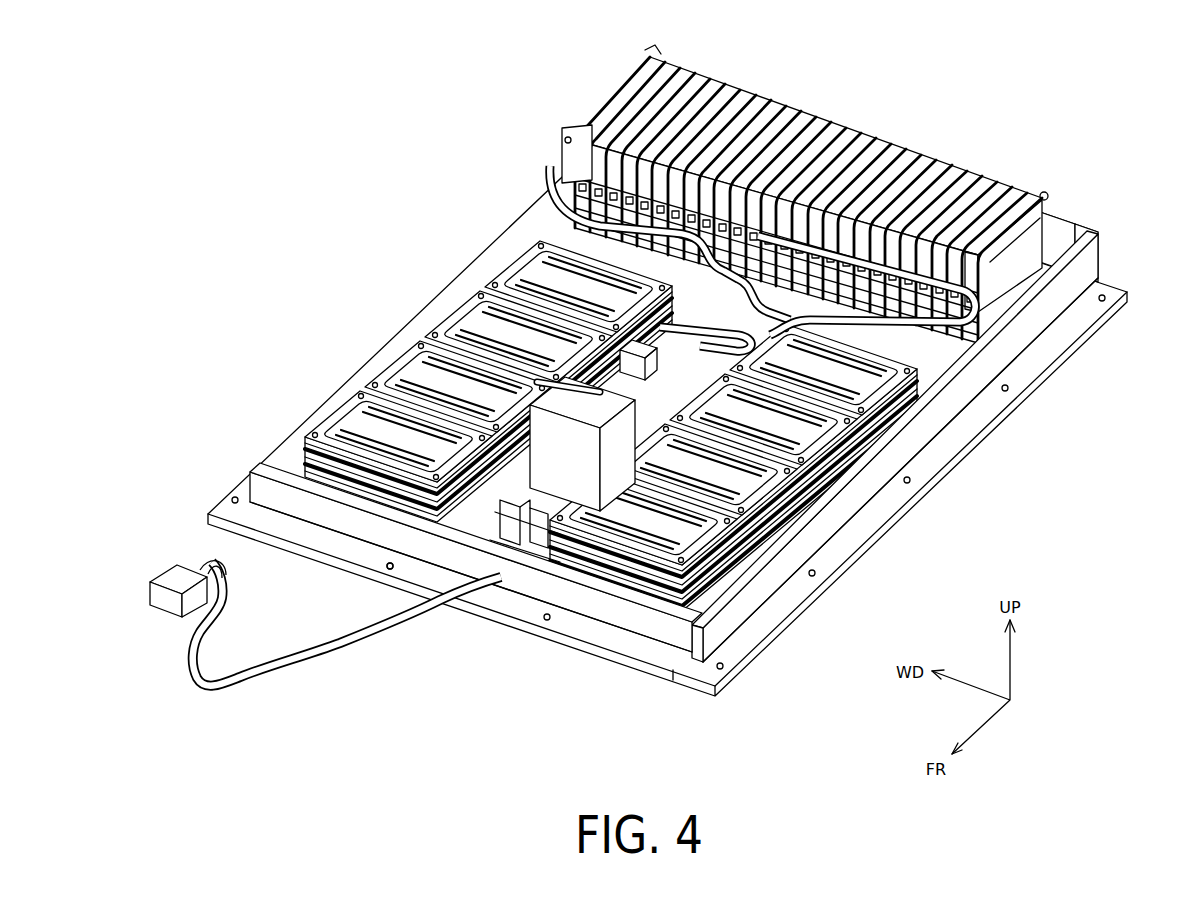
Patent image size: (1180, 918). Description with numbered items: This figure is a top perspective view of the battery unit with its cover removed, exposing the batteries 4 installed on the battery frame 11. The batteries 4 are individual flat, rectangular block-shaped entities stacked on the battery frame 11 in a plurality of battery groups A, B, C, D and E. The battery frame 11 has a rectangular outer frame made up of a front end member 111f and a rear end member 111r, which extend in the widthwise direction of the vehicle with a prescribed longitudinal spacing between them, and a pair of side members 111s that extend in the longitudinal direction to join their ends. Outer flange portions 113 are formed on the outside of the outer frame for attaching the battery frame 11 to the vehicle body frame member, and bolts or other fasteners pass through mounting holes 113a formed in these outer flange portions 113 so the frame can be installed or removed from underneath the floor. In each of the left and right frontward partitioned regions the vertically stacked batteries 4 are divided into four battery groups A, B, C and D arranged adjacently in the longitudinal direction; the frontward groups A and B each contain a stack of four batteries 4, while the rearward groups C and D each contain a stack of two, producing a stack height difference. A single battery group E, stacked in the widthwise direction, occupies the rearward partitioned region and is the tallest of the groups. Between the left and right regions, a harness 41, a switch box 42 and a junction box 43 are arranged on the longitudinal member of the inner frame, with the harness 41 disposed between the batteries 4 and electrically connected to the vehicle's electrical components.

The battery 4 is at (715, 96).
The battery frame 11 is at (1102, 268).
The harness 41 is at (598, 185).
The switch box 42 is at (630, 357).
The junction box 43 is at (527, 492).
The front end member 111f is at (620, 618).
The side member 111s is at (870, 484).
The rear end member 111r is at (1072, 234).
The outer flange portion 113 is at (487, 598).
The mounting hole 113a is at (386, 568).
The battery group E is at (790, 105).
The battery group A is at (333, 410).
The battery group B is at (373, 353).
The battery group C is at (467, 313).
The battery group D is at (520, 265).